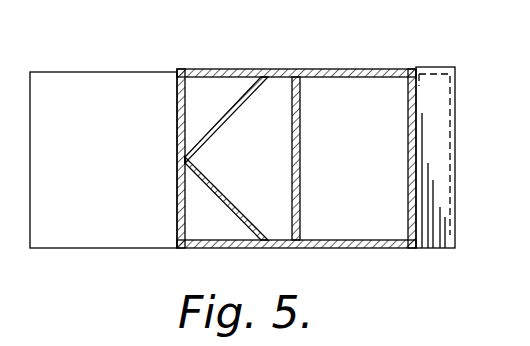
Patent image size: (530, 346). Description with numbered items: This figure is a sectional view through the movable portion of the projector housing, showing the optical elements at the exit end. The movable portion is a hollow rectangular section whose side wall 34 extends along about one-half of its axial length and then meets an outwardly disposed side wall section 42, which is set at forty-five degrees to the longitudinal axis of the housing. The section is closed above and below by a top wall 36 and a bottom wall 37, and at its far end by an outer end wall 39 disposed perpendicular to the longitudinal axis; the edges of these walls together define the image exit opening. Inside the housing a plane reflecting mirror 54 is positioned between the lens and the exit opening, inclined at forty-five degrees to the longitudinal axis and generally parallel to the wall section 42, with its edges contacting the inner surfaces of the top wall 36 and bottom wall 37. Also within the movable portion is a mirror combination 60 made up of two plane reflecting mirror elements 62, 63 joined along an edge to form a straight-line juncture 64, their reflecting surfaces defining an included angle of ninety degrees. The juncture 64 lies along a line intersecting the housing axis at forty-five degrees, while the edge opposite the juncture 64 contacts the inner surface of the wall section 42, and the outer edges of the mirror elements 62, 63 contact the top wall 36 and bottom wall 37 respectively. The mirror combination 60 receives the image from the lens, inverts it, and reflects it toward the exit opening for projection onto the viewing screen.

The side wall 34 is at (62, 92).
The side wall section 42 is at (176, 110).
The top wall 36 is at (362, 69).
The bottom wall 37 is at (372, 248).
The plane reflecting mirror 54 is at (300, 125).
The mirror combination 60 is at (207, 153).
The plane reflecting mirror element 62 is at (252, 108).
The plane reflecting mirror element 63 is at (253, 208).
The juncture 64 is at (221, 166).
The outer end wall 39 is at (432, 138).